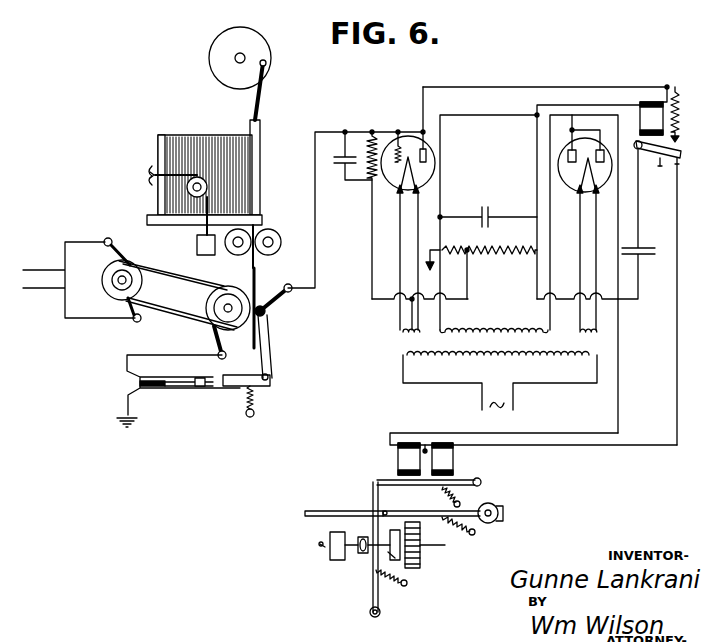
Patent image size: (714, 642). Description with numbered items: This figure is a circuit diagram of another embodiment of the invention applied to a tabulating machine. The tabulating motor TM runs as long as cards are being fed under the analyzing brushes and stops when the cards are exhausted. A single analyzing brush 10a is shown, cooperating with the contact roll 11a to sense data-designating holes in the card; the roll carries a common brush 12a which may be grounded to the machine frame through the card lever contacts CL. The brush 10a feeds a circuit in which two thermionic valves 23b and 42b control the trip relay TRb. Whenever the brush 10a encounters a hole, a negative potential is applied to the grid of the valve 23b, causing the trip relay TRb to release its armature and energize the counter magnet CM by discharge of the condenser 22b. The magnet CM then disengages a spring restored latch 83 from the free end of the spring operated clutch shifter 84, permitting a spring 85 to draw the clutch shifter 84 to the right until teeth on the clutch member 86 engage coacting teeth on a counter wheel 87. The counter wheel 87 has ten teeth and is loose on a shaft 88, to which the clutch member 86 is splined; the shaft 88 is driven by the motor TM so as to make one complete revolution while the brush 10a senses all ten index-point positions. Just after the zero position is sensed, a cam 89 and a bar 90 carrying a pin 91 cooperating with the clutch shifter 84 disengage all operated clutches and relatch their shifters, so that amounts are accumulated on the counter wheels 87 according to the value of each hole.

The tabulating motor TM is at (82, 280).
The contact roll 11a is at (239, 284).
The common brush 12a is at (210, 336).
The analyzing brush 10a is at (280, 295).
The card lever contacts CL is at (192, 386).
The thermionic valve 23b is at (435, 180).
The thermionic valve 42b is at (558, 176).
The trip relay TRb is at (638, 118).
The condenser 22b is at (658, 252).
The counter magnet CM is at (453, 462).
The spring restored latch 83 is at (390, 480).
The clutch shifter 84 is at (372, 495).
The bar 90 is at (310, 512).
The pin 91 is at (385, 513).
The cam 89 is at (495, 507).
The shaft 88 is at (323, 549).
The counter wheel 87 is at (425, 544).
The clutch member 86 is at (400, 565).
The spring 85 is at (390, 583).